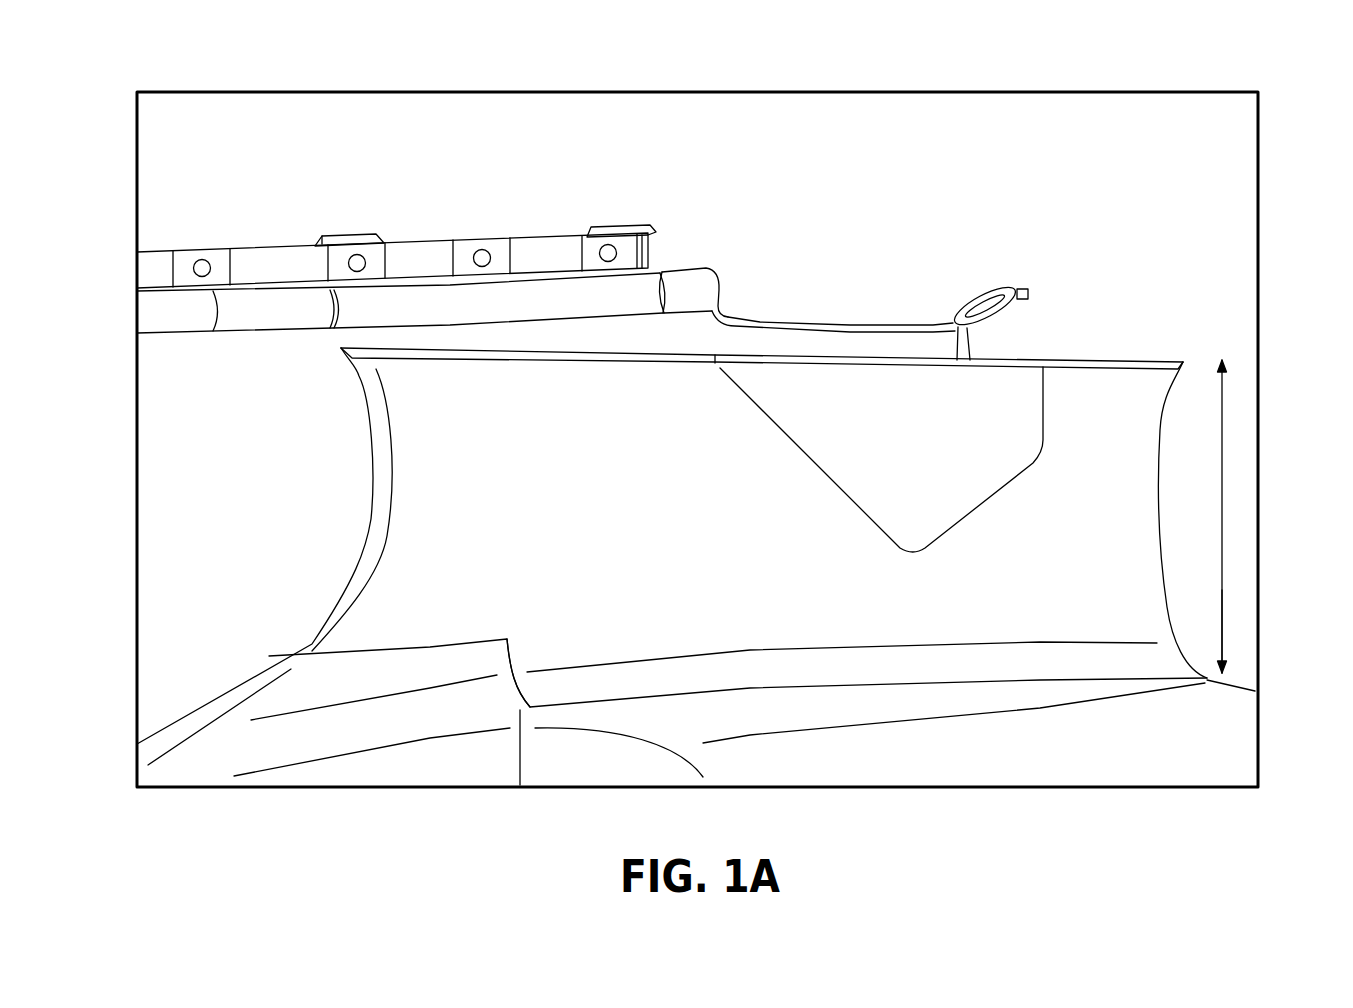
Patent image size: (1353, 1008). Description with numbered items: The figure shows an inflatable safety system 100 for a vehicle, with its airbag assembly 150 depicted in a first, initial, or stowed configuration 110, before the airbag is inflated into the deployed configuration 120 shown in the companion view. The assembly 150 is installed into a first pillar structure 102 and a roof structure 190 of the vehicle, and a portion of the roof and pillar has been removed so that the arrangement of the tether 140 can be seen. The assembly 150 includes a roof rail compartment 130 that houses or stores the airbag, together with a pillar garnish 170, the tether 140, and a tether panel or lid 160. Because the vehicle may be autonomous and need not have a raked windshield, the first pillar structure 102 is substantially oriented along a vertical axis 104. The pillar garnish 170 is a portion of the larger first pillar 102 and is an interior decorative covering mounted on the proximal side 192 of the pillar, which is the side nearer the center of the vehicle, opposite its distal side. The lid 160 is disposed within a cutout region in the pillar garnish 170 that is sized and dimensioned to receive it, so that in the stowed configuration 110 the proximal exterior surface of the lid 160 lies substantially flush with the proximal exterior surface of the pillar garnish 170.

The inflatable safety system 100 is at (941, 130).
The first pillar structure 102 is at (1236, 522).
The vertical axis 104 is at (1223, 590).
The stowed configuration 110 is at (1113, 328).
The deployed configuration 120 is at (168, 680).
The roof rail compartment 130 is at (427, 266).
The tether 140 is at (852, 322).
The airbag assembly 150 is at (703, 253).
The tether panel or lid 160 is at (893, 454).
The pillar garnish 170 is at (640, 550).
The roof structure 190 is at (266, 233).
The proximal side 192 is at (603, 697).